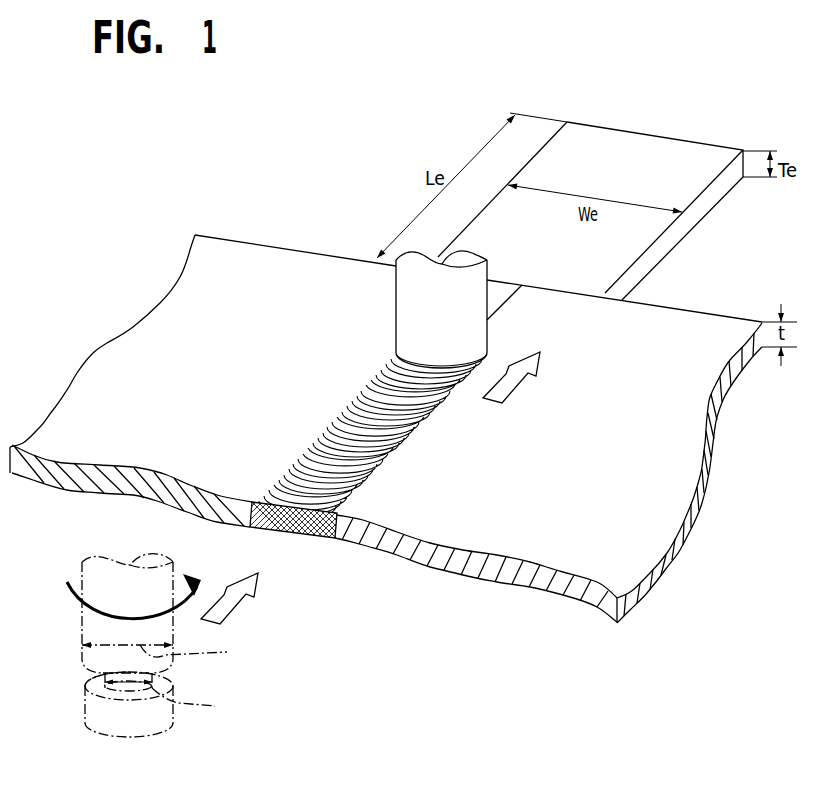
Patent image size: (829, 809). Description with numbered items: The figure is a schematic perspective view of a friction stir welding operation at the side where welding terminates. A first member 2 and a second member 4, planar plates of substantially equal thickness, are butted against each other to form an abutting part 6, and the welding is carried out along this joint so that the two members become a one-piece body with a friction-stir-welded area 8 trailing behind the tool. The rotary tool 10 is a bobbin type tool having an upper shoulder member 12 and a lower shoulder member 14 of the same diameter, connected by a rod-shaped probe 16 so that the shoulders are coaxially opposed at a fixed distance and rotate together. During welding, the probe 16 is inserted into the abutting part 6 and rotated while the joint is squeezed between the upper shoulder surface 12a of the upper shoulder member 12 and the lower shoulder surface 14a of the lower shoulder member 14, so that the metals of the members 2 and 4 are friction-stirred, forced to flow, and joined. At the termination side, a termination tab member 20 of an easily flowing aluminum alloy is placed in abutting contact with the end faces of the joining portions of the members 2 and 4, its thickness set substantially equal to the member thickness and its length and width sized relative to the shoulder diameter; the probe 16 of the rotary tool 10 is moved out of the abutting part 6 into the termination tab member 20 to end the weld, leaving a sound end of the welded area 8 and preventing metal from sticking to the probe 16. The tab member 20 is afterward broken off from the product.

The first member 2 is at (263, 267).
The second member 4 is at (622, 520).
The abutting part 6 is at (513, 305).
The friction-stir-welded area 8 is at (373, 442).
The rotary tool 10 is at (257, 526).
The upper shoulder member 12 is at (412, 292).
The upper shoulder surface 12a is at (152, 672).
The lower shoulder member 14 is at (137, 723).
The lower shoulder surface 14a is at (82, 690).
The probe 16 is at (123, 688).
The termination tab member 20 is at (641, 150).